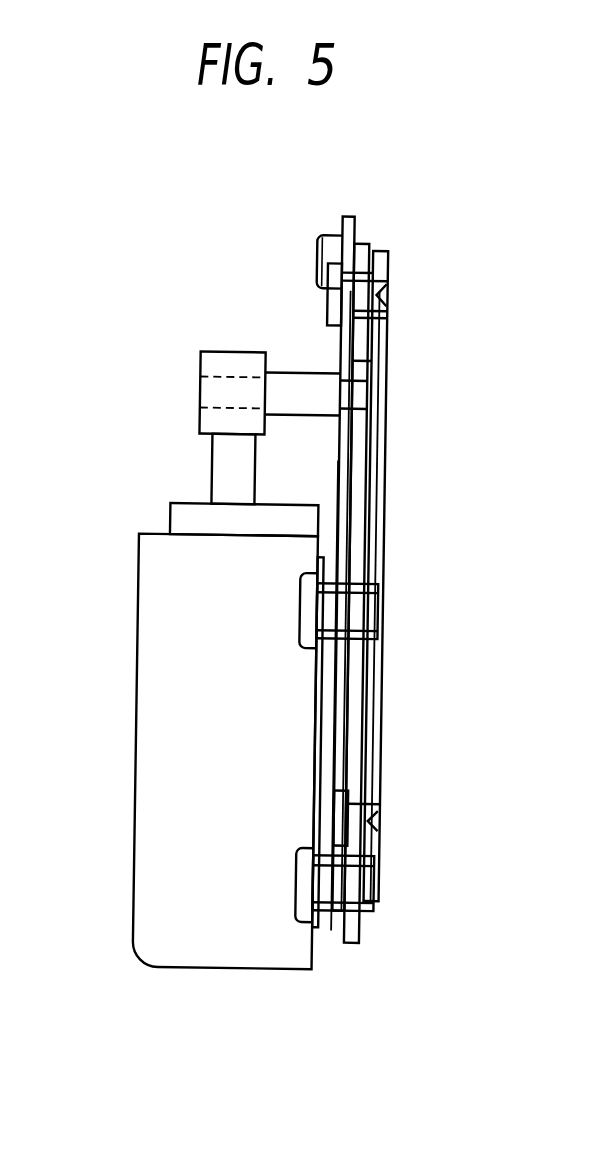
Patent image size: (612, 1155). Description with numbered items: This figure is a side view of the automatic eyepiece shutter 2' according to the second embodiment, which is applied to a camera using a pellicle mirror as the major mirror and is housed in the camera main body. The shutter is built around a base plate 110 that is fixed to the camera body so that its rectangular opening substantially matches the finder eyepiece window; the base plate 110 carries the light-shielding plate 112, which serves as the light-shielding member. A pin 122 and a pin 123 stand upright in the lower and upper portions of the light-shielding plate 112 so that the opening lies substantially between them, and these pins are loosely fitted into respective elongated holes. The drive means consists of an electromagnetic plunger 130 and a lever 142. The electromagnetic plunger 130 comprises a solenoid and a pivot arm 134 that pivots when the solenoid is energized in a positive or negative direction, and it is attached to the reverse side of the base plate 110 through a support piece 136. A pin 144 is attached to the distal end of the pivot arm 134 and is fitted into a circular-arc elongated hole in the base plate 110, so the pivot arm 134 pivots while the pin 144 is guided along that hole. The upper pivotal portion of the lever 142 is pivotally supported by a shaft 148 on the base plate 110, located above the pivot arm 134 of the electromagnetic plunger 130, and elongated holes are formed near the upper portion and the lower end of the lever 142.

The automatic eyepiece shutter 2' is at (399, 191).
The base plate 110 is at (358, 480).
The light-shielding plate 112 is at (384, 262).
The pin 122 is at (320, 822).
The pin 123 is at (325, 296).
The electromagnetic plunger 130 is at (134, 745).
The pivot arm 134 is at (208, 483).
The support piece 136 is at (316, 702).
The lever 142 is at (336, 337).
The pin 144 is at (275, 372).
The shaft 148 is at (311, 240).